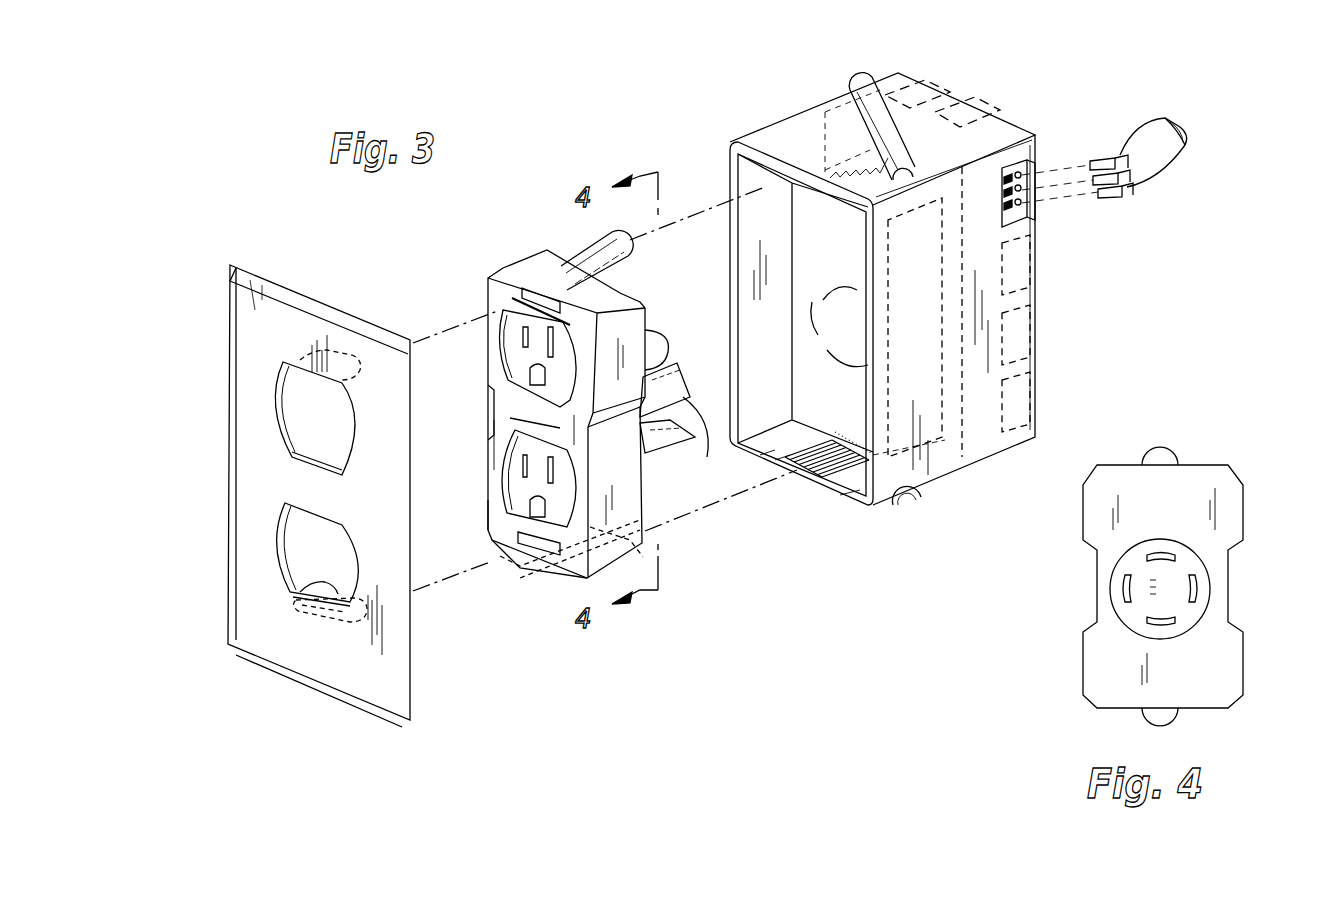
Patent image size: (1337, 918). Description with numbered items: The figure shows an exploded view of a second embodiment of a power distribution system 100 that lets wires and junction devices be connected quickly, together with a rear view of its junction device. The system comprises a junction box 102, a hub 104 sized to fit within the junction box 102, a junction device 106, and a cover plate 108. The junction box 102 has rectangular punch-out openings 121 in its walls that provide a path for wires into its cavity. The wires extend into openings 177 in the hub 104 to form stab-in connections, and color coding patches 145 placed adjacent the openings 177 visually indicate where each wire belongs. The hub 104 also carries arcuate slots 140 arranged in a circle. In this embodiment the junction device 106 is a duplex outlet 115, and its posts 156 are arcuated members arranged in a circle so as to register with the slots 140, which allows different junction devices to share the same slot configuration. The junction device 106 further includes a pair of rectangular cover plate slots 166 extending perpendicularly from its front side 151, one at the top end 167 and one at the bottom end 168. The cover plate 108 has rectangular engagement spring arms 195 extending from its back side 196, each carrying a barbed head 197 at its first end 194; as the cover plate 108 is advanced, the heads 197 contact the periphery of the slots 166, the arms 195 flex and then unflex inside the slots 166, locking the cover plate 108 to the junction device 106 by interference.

In FIG. 3, the power distribution system 100 is at (737, 604).
In FIG. 3, the junction box 102 is at (955, 105).
In FIG. 3, the hub 104 is at (985, 440).
In FIG. 3, the junction device 106 is at (536, 258).
In FIG. 4, the junction device 106 is at (1212, 463).
In FIG. 3, the cover plate 108 is at (262, 300).
In FIG. 3, the duplex outlet 115 is at (510, 355).
In FIG. 3, the openings 121 is at (1022, 200).
In FIG. 3, the slots 140 is at (810, 320).
In FIG. 3, the color coding patches 145 is at (1038, 160).
In FIG. 3, the front side 151 is at (535, 411).
In FIG. 3, the posts 156 is at (652, 450).
In FIG. 4, the posts 156 is at (1125, 594).
In FIG. 3, the cover plate slots 166 is at (540, 300).
In FIG. 3, the top end 167 is at (500, 287).
In FIG. 3, the bottom end 168 is at (497, 531).
In FIG. 3, the openings 177 is at (1025, 225).
In FIG. 3, the first end 194 is at (346, 352).
In FIG. 3, the engagement spring arms 195 is at (322, 350).
In FIG. 3, the back side 196 is at (283, 400).
In FIG. 3, the barbed head 197 is at (360, 372).